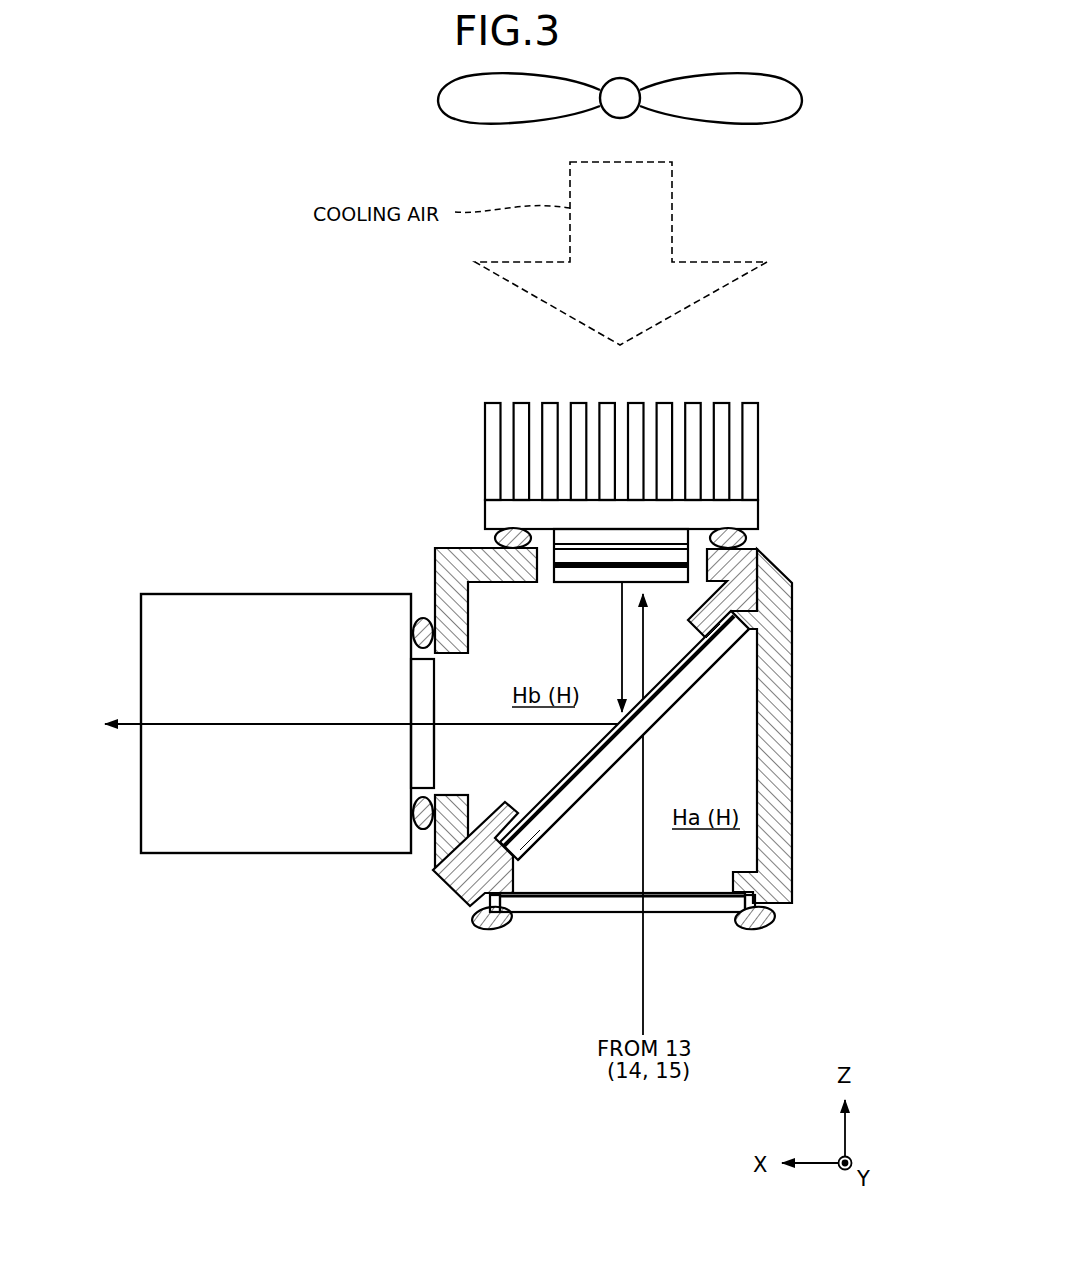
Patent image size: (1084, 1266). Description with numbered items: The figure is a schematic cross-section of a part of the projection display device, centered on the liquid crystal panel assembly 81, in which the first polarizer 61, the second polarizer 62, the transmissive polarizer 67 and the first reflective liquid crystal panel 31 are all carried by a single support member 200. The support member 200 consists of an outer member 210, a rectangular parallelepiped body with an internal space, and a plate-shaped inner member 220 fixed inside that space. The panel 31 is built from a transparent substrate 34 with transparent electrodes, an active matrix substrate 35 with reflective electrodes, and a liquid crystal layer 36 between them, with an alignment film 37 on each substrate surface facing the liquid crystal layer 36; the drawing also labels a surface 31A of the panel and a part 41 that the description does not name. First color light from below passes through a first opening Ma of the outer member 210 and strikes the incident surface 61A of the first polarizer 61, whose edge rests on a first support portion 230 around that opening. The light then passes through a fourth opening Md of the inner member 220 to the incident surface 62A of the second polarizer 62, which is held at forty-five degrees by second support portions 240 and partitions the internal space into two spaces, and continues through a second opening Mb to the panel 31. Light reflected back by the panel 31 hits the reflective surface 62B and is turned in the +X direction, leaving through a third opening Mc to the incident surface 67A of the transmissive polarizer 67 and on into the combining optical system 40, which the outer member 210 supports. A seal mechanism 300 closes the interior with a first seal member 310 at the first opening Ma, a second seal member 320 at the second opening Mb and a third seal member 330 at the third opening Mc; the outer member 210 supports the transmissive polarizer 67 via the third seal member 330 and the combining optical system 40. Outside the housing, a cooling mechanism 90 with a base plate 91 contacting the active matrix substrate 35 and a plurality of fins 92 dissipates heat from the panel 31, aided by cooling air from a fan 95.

The fan 95 is at (440, 95).
The liquid crystal panel assembly 81 is at (258, 368).
The cooling mechanism 90 is at (617, 451).
The fins 92 is at (758, 415).
The base plate 91 is at (758, 514).
The first reflective liquid crystal panel 31 is at (674, 558).
The active matrix substrate 35 is at (584, 537).
The liquid crystal layer 36 is at (567, 557).
The alignment film 37 is at (677, 547).
The transparent substrate 34 is at (563, 575).
The light incident surface 31A is at (587, 583).
The second seal member 320 is at (745, 540).
The third seal member 330 is at (420, 614).
The combining optical system 40 is at (194, 594).
The transmissive polarizer 67 is at (423, 690).
The incident surface 67A is at (445, 750).
The support member 200 is at (784, 726).
The outer member 210 is at (792, 830).
The second support portions 240 is at (712, 641).
The second polarizer 62 is at (696, 735).
The reflective surface 62B is at (520, 833).
The incident surface 62A is at (610, 770).
The elastic member 41 is at (421, 830).
The inner member 220 is at (487, 927).
The first polarizer 61 is at (622, 949).
The incident surface 61A is at (675, 913).
The first support portion 230 is at (712, 913).
The first seal member 310 is at (755, 930).
The seal mechanism 300 is at (794, 928).
The first opening Ma is at (732, 890).
The second opening Mb is at (710, 567).
The third opening Mc is at (455, 656).
The fourth opening Md is at (510, 803).